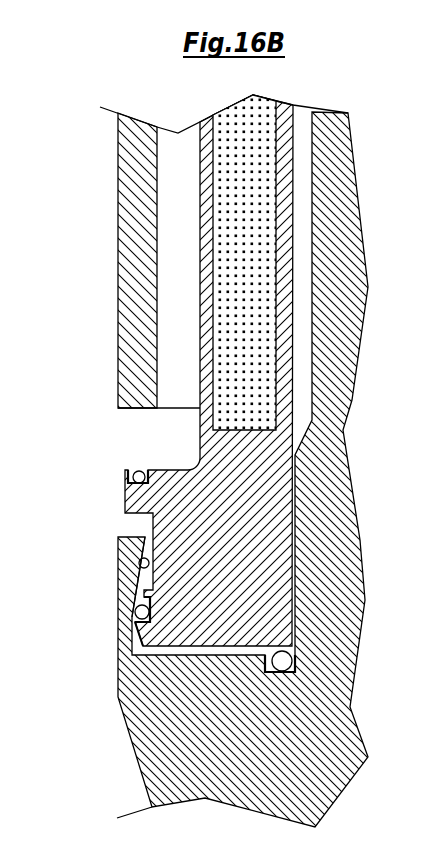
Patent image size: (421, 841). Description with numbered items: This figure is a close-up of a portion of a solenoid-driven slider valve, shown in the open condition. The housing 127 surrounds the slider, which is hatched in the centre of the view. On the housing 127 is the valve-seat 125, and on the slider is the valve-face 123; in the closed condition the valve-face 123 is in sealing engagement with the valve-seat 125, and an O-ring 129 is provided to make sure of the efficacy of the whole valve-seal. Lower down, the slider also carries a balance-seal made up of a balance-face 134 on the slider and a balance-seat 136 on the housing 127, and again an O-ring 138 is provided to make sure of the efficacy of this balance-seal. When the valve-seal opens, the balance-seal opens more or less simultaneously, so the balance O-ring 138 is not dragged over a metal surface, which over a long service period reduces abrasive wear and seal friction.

The housing 127 is at (140, 212).
The valve-seat 125 is at (120, 409).
The O-ring 129 is at (128, 466).
The valve-face 123 is at (126, 470).
The balance-seat 136 is at (140, 570).
The balance-face 134 is at (138, 606).
The O-ring 138 is at (135, 614).